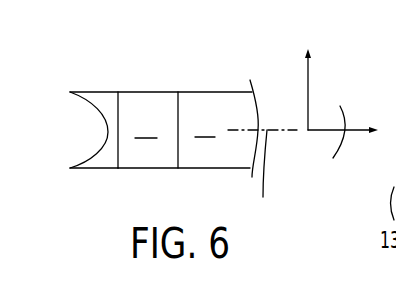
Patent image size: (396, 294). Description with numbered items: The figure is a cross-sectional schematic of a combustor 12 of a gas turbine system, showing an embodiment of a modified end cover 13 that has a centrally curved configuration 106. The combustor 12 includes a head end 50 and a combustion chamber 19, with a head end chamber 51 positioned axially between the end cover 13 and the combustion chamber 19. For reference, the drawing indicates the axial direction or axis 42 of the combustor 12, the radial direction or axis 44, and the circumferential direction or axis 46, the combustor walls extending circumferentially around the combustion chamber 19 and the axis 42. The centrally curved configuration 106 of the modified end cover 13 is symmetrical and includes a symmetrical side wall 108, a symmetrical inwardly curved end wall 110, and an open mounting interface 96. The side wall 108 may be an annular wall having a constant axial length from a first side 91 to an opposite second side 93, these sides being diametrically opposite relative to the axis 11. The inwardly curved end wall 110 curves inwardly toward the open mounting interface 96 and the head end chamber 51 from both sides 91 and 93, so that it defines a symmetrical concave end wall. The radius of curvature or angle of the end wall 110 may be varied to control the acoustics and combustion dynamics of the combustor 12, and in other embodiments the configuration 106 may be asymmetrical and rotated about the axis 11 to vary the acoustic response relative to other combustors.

The axis 11 is at (261, 156).
The combustor 12 is at (228, 56).
The end cover 13 is at (58, 108).
The combustion chamber 19 is at (246, 126).
The axial direction or axis 42 is at (330, 132).
The radial direction or axis 44 is at (307, 93).
The circumferential direction or axis 46 is at (330, 102).
The head end 50 is at (152, 74).
The head end chamber 51 is at (146, 127).
The first side 91 is at (118, 168).
The second side 93 is at (118, 92).
The open mounting interface 96 is at (118, 127).
The centrally curved configuration 106 is at (70, 146).
The symmetrical side wall 108 is at (93, 170).
The symmetrical inwardly curved end wall 110 is at (93, 104).